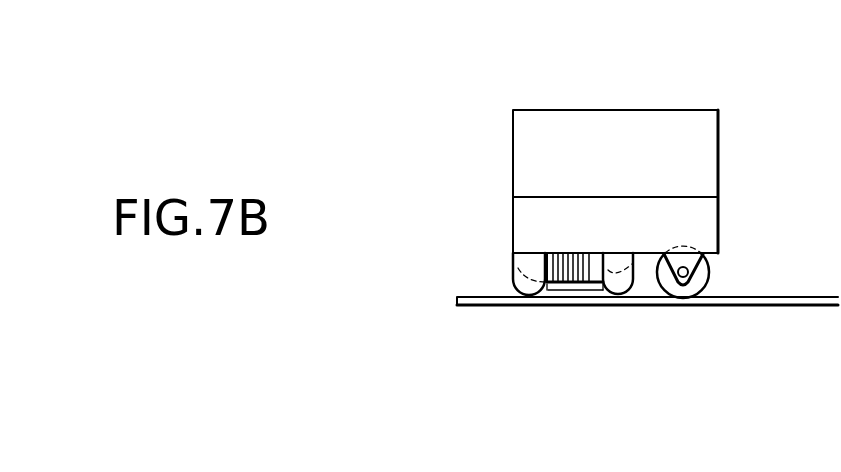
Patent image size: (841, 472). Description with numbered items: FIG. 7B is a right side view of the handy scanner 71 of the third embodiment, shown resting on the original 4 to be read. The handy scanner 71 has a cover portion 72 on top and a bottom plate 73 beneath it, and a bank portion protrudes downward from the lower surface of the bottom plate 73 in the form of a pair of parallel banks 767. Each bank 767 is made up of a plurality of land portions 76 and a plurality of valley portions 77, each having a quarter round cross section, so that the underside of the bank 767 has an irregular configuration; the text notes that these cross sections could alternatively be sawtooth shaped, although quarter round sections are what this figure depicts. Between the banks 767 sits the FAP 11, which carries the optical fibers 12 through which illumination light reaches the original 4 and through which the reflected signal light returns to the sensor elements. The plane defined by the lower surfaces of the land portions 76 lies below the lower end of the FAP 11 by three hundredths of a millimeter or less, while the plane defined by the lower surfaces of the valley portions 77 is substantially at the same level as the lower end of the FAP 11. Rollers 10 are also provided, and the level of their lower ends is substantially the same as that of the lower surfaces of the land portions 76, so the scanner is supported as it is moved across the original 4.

The original 4 is at (797, 307).
The rollers 10 is at (710, 280).
The FAP 11 is at (549, 284).
The optical fibers 12 is at (575, 284).
The handy scanner 71 is at (650, 143).
The cover portion 72 is at (714, 143).
The bottom plate 73 is at (714, 218).
The land portions 76 is at (514, 285).
The valley portions 77 is at (525, 280).
The banks 767 is at (500, 258).